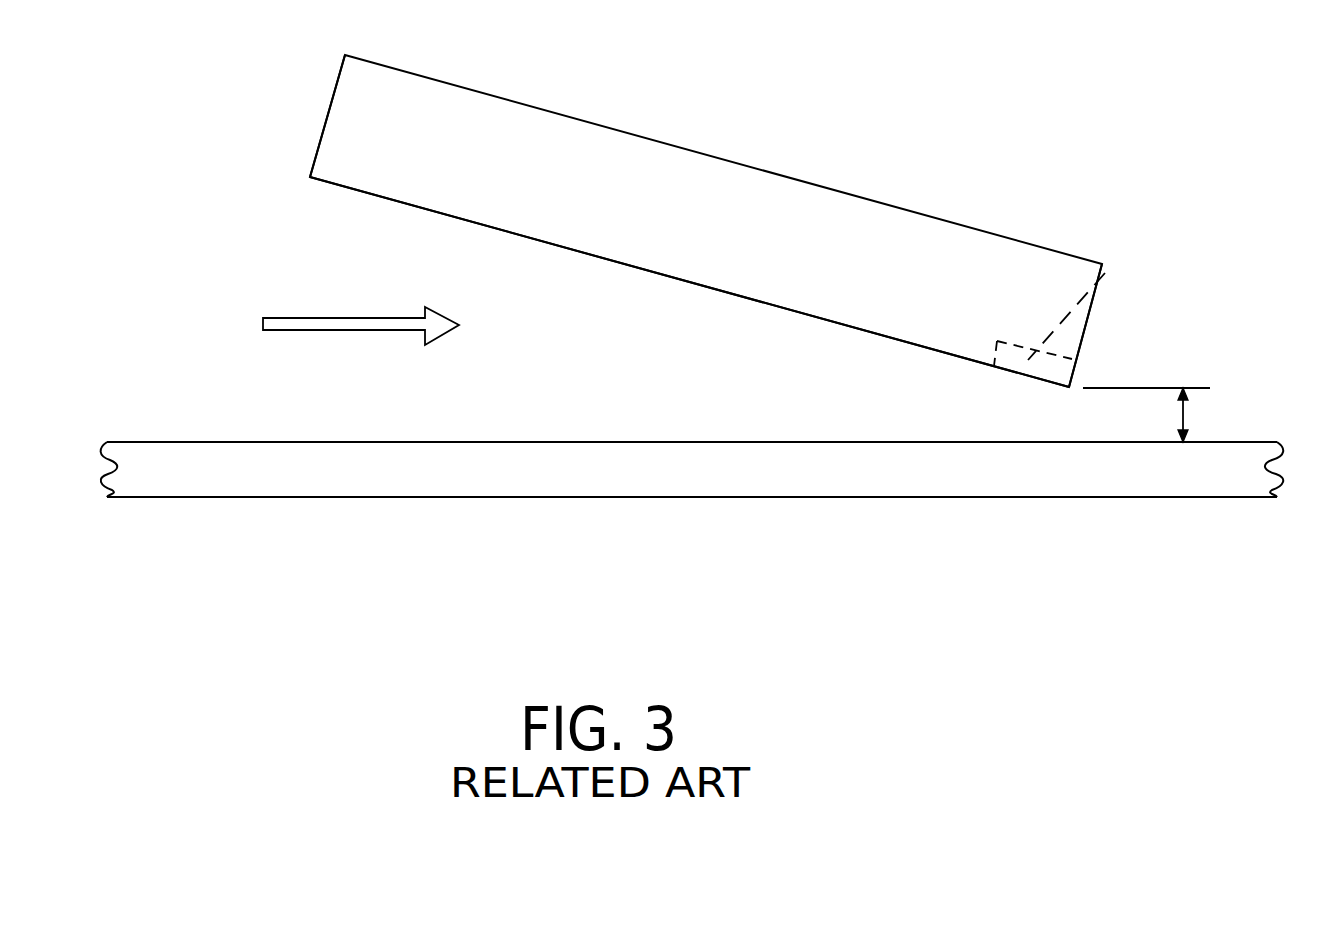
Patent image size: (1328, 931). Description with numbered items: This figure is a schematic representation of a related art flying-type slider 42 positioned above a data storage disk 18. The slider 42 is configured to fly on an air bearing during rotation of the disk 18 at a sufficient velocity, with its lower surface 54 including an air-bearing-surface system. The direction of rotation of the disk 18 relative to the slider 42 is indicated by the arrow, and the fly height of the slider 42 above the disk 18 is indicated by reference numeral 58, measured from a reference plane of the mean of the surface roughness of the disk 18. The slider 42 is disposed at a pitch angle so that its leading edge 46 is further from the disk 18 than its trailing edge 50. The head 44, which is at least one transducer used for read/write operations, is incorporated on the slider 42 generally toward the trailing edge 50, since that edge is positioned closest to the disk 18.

The data storage disk 18 is at (190, 442).
The slider 42 is at (729, 237).
The head 44 is at (1110, 268).
The leading edge 46 is at (310, 177).
The trailing edge 50 is at (1069, 387).
The lower surface 54 is at (617, 263).
The fly height 58 is at (1185, 415).